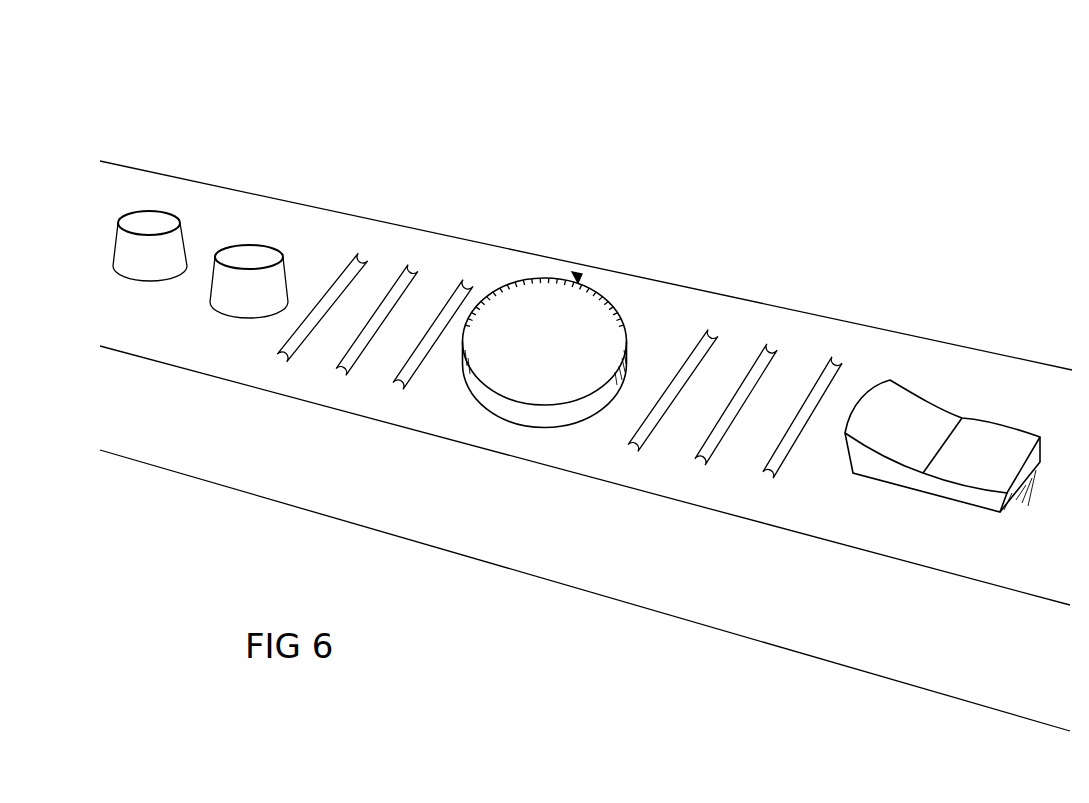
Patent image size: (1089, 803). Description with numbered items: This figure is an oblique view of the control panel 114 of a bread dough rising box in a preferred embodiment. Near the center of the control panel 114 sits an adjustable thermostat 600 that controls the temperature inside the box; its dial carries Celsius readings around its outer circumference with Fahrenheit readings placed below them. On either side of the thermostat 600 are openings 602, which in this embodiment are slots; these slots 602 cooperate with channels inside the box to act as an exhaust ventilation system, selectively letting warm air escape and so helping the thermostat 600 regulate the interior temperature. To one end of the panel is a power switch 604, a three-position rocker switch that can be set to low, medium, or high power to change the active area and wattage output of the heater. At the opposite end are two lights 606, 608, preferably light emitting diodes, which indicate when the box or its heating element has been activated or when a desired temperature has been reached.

The control panel 114 is at (843, 171).
The adjustable thermostat 600 is at (608, 293).
The openings 602 is at (430, 254).
The power switch 604 is at (967, 393).
The light 606 is at (235, 333).
The light 608 is at (185, 219).